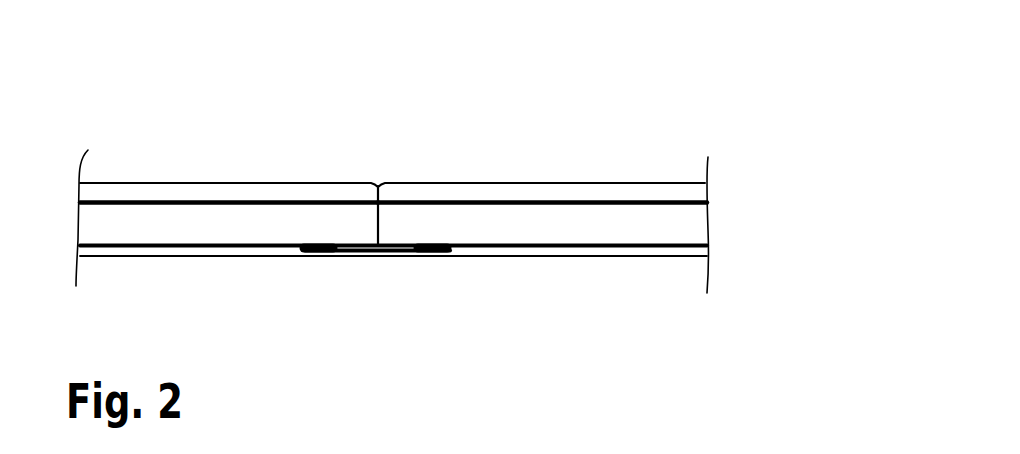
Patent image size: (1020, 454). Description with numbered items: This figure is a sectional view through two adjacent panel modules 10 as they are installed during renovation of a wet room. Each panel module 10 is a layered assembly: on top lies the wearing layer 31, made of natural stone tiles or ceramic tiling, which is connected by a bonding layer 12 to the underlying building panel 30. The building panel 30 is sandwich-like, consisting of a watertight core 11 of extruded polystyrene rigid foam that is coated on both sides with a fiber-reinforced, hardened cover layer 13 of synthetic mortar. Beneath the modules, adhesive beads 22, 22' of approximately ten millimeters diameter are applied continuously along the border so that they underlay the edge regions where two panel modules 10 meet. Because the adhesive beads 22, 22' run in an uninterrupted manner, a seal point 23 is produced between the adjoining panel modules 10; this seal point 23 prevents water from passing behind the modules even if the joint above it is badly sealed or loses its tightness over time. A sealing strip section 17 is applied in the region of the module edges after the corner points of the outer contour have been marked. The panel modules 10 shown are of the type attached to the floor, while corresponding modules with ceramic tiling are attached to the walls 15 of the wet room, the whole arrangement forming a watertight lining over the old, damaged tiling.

The panel module 10 is at (206, 160).
The watertight core 11 is at (283, 214).
The bonding layer 12 is at (157, 197).
The cover layer 13 is at (111, 208).
The walls 15 is at (534, 258).
The sealing strip section 17 is at (406, 257).
The adhesive bead 22 is at (343, 169).
The adhesive bead 22' is at (442, 170).
The seal point 23 is at (386, 176).
The building panel 30 is at (258, 251).
The wearing layer 31 is at (243, 189).